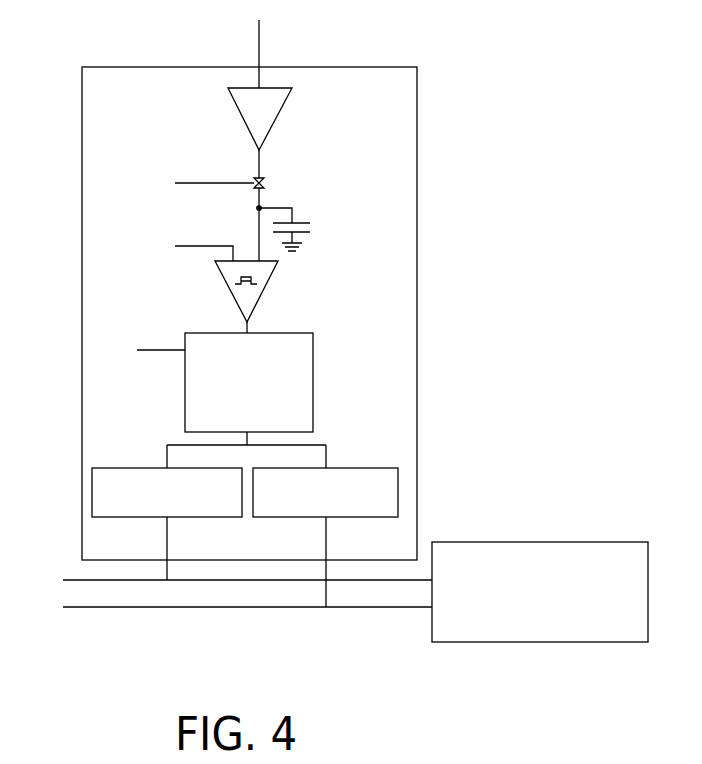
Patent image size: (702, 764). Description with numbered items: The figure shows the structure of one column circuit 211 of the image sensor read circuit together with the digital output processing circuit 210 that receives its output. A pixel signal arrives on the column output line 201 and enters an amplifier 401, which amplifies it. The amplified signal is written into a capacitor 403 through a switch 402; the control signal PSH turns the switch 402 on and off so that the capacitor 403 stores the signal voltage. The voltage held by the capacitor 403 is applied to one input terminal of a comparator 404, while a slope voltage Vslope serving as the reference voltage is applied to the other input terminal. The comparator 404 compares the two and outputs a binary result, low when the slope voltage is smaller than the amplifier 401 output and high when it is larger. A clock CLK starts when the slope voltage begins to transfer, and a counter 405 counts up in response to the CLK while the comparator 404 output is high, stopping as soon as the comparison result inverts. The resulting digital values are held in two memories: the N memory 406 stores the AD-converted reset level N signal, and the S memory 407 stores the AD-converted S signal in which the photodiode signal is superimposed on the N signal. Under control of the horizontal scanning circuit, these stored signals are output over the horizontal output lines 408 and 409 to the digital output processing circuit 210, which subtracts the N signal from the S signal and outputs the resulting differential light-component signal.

The column output line 201 is at (283, 54).
The digital output processing circuit 210 is at (470, 542).
The column circuit 211 is at (82, 207).
The amplifier 401 is at (276, 118).
The switch 402 is at (243, 211).
The capacitor 403 is at (296, 226).
The comparator 404 is at (272, 273).
The counter 405 is at (313, 373).
The N memory 406 is at (98, 467).
The S memory 407 is at (348, 468).
The horizontal output line 408 is at (128, 581).
The horizontal output line 409 is at (250, 608).